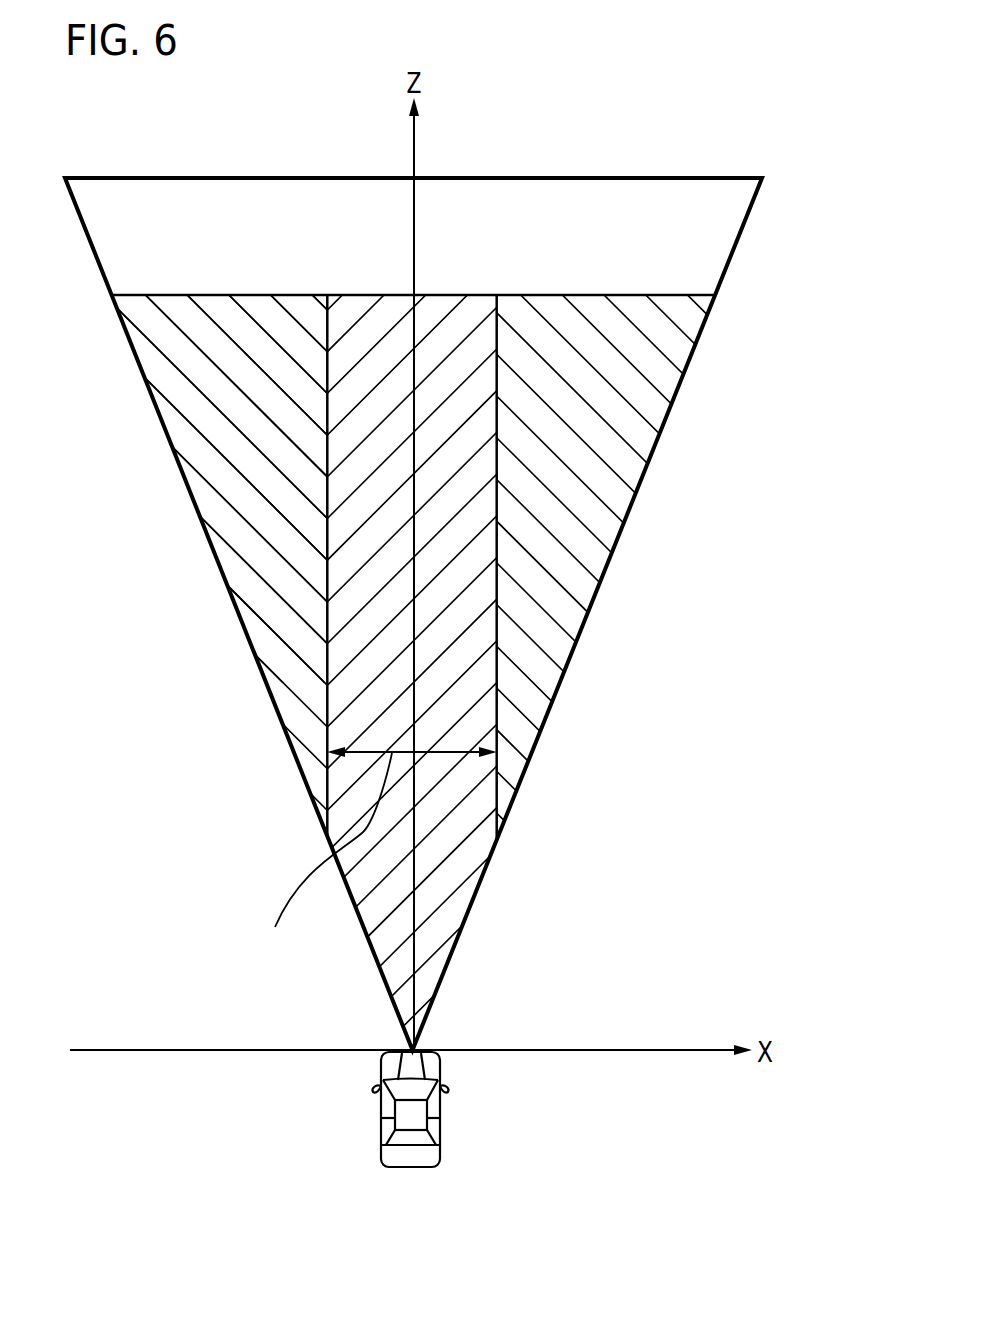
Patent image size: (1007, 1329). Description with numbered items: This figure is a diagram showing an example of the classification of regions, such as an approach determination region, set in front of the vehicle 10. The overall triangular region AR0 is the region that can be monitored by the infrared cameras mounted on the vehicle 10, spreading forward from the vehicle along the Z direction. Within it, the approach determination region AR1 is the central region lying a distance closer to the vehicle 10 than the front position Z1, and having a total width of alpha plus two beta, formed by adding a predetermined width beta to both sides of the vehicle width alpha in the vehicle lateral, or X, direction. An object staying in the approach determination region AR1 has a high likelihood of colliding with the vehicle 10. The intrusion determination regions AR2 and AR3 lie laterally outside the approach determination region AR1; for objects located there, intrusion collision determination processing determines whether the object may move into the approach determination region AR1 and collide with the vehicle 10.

The monitorable region AR0 is at (740, 242).
The approach determination region AR1 is at (450, 863).
The intrusion determination region AR2 is at (600, 520).
The intrusion determination region AR3 is at (215, 462).
The front position Z1 is at (415, 293).
The vehicle 10 is at (440, 1119).